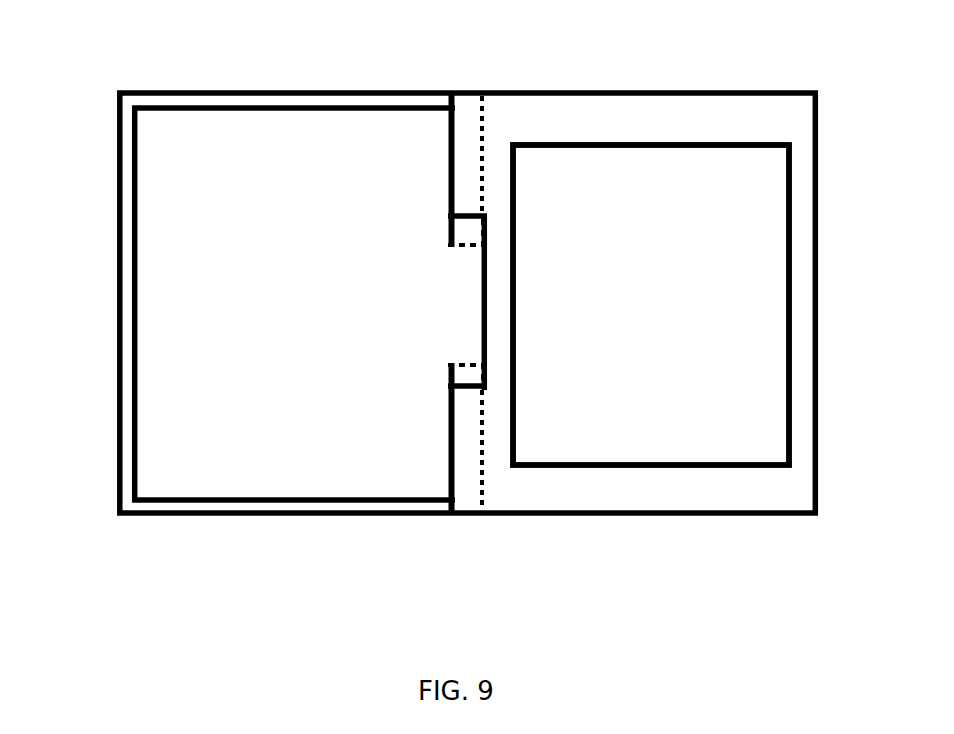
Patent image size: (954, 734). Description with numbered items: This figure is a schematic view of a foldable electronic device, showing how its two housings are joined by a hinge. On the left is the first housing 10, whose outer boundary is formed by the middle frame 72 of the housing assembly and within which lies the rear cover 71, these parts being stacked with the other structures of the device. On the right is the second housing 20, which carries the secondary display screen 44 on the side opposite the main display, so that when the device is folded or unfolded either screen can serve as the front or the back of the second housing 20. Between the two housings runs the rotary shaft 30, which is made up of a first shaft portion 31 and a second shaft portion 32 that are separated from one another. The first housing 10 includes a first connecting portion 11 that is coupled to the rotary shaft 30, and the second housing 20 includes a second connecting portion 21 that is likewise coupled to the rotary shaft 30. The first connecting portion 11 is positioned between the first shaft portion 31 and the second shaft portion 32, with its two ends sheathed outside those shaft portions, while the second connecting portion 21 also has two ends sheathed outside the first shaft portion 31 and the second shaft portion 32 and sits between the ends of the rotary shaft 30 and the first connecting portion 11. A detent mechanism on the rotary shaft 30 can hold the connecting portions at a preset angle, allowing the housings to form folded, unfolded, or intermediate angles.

The first housing 10 is at (413, 315).
The first connecting portion 11 is at (468, 305).
The second housing 20 is at (685, 85).
The second connecting portion 21 is at (467, 142).
The rotary shaft 30 is at (677, 349).
The first shaft portion 31 is at (503, 143).
The second shaft portion 32 is at (508, 472).
The secondary display screen 44 is at (734, 200).
The rear cover 71 is at (238, 283).
The middle frame 72 is at (117, 163).